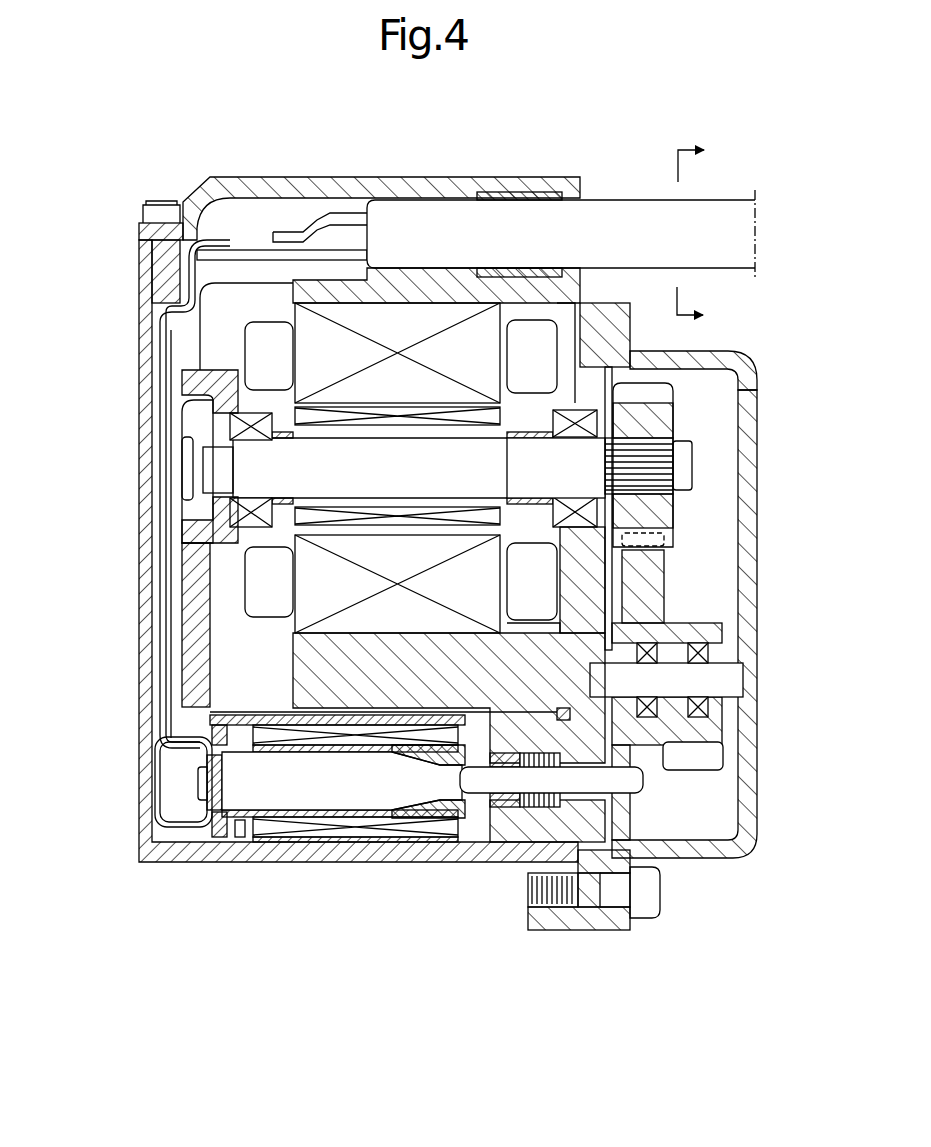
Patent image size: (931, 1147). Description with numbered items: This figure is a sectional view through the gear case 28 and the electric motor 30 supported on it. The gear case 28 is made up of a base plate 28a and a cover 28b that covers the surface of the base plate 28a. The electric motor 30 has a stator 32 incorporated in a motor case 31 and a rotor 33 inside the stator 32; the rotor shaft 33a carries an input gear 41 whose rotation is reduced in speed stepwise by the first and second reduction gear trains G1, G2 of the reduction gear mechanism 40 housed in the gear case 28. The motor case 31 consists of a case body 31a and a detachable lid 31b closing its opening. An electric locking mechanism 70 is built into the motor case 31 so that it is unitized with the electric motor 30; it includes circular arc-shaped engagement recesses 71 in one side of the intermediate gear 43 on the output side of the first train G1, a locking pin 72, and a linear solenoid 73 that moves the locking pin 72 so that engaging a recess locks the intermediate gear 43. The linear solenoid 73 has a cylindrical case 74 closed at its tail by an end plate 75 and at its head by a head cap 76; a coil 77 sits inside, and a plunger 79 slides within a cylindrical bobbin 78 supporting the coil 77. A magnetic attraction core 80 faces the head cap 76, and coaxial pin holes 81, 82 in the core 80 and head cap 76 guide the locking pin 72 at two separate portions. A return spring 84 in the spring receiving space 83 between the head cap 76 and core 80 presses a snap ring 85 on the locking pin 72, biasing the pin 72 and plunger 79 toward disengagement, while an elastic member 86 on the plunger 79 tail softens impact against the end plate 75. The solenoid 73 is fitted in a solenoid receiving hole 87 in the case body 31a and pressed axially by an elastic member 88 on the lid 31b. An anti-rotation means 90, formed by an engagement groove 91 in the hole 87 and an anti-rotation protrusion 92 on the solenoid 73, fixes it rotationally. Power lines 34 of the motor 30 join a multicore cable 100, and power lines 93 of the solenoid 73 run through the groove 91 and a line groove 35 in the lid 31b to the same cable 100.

The gear case 28 is at (748, 357).
The base plate 28a is at (598, 318).
The cover 28b is at (705, 351).
The electric motor 30 is at (490, 258).
The motor case 31 is at (252, 177).
The case body 31a is at (393, 192).
The lid 31b is at (152, 266).
The stator 32 is at (420, 310).
The rotor 33 is at (383, 481).
The rotor shaft 33a is at (535, 481).
The power lines 34 is at (178, 343).
The line groove 35 is at (153, 443).
The reduction gear mechanism 40 is at (678, 525).
The input gear 41 is at (672, 420).
The intermediate gear 43 is at (662, 782).
The electric locking mechanism 70 is at (410, 862).
The engagement recesses 71 is at (677, 857).
The locking pin 72 is at (557, 907).
The linear solenoid 73 is at (300, 848).
The cylindrical case 74 is at (243, 862).
The end plate 75 is at (175, 850).
The head cap 76 is at (600, 917).
The coil 77 is at (340, 835).
The cylindrical bobbin 78 is at (365, 830).
The plunger 79 is at (385, 810).
The magnetic attraction core 80 is at (448, 827).
The pin hole 81 is at (478, 800).
The pin hole 82 is at (630, 890).
The spring receiving space 83 is at (542, 910).
The return spring 84 is at (540, 805).
The snap ring 85 is at (500, 810).
The elastic member 86 is at (202, 845).
The solenoid receiving hole 87 is at (282, 830).
The elastic member 88 is at (152, 793).
The anti-rotation means 90 is at (560, 698).
The engagement groove 91 is at (400, 708).
The anti-rotation protrusion 92 is at (548, 690).
The power lines 93 is at (160, 590).
The multicore cable 100 is at (596, 215).
The first reduction gear train G1 is at (670, 553).
The second reduction gear train G2 is at (727, 742).